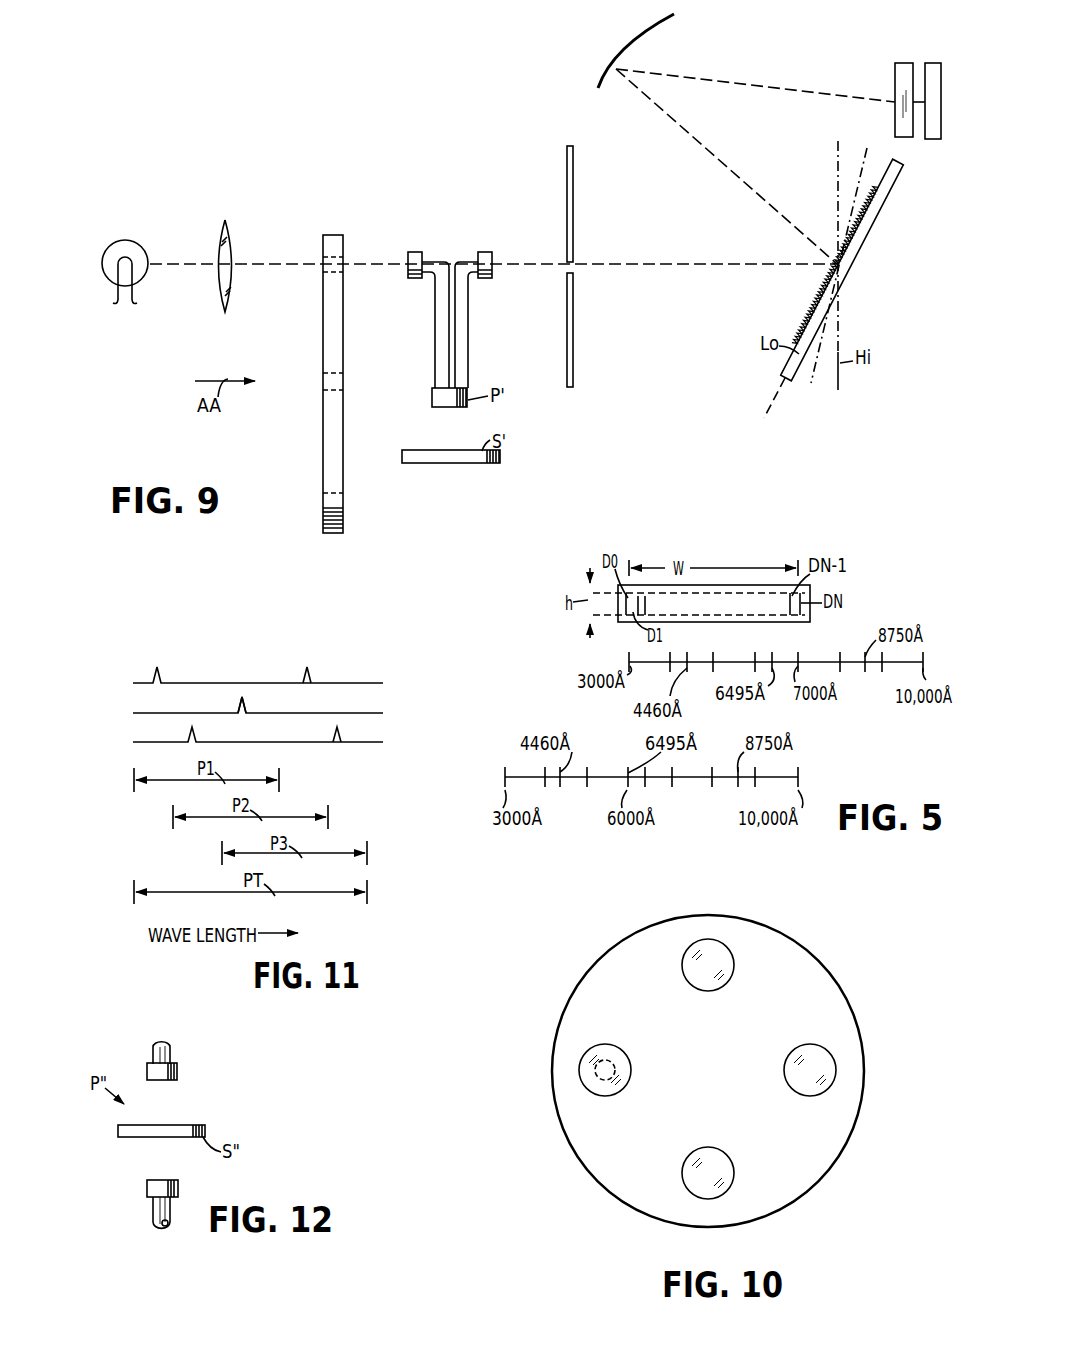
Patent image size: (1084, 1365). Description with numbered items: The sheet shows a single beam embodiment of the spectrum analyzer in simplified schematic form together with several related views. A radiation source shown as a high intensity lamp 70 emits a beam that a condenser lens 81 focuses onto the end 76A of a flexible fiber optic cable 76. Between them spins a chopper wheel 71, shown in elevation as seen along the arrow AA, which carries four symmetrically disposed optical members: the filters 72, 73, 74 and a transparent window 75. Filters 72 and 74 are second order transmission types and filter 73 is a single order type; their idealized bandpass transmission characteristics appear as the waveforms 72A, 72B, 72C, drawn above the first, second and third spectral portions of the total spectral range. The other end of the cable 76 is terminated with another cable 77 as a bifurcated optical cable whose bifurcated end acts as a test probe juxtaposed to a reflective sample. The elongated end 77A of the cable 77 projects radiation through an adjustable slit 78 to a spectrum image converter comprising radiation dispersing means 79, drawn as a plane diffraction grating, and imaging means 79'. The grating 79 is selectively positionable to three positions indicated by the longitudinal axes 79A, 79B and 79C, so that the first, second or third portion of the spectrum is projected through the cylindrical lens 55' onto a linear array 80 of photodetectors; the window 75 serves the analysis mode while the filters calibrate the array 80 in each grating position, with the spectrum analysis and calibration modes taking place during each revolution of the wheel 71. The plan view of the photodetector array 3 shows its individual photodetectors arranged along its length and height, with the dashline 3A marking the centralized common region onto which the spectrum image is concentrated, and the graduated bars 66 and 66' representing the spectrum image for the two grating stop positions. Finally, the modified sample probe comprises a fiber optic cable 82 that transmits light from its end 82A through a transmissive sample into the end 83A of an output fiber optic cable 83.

In FIG. 9, the high intensity lamp 70 is at (134, 244).
In FIG. 9, the condenser lens 81 is at (234, 245).
In FIG. 9, the chopper wheel 71 is at (334, 235).
In FIG. 10, the chopper wheel 71 is at (719, 1112).
In FIG. 9, the filter 73 is at (323, 270).
In FIG. 11, the filter 73 is at (220, 711).
In FIG. 10, the filter 73 is at (730, 972).
In FIG. 9, the filter 74 is at (343, 390).
In FIG. 11, the filter 74 is at (220, 740).
In FIG. 10, the filter 74 is at (810, 1088).
In FIG. 9, the transparent window 75 is at (343, 507).
In FIG. 10, the transparent window 75 is at (728, 1172).
In FIG. 11, the filter 72 is at (220, 681).
In FIG. 10, the filter 72 is at (604, 1045).
In FIG. 9, the end of fiber optic cable 76A is at (409, 253).
In FIG. 10, the end of fiber optic cable 76A is at (622, 1062).
In FIG. 9, the end of fiber optic cable 77A is at (491, 253).
In FIG. 9, the flexible fiber optic cable 76 is at (436, 328).
In FIG. 9, the flexible fiber optic cable 77 is at (467, 328).
In FIG. 9, the adjustable slit 78 is at (574, 247).
In FIG. 9, the radiation dispersing means 79 is at (853, 270).
In FIG. 9, the imaging means 79' is at (630, 51).
In FIG. 9, the longitudinal axis 79A is at (768, 410).
In FIG. 9, the longitudinal axis 79B is at (811, 385).
In FIG. 9, the longitudinal axis 79C is at (842, 336).
In FIG. 9, the cylindrical lens 55' is at (908, 83).
In FIG. 9, the linear array of photodetectors 80 is at (933, 63).
In FIG. 5, the photodetector array 3 is at (735, 550).
In FIG. 5, the centralized common region 3A is at (752, 605).
In FIG. 5, the bar 66 is at (776, 647).
In FIG. 5, the bar 66' is at (651, 798).
In FIG. 11, the waveform 72A is at (347, 687).
In FIG. 11, the waveform 72B is at (296, 717).
In FIG. 11, the waveform 72C is at (290, 746).
In FIG. 12, the fiber optic cable 82 is at (171, 1053).
In FIG. 12, the end of fiber optic cable 82A is at (170, 1080).
In FIG. 12, the output fiber optic cable 83 is at (155, 1211).
In FIG. 12, the end of output fiber optic cable 83A is at (170, 1185).